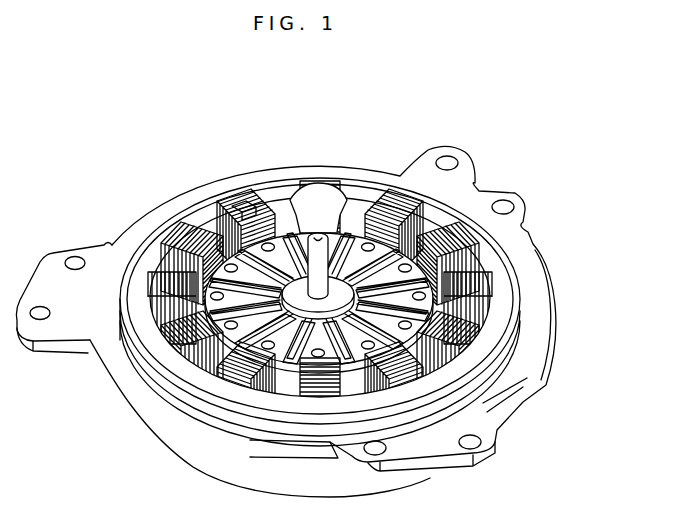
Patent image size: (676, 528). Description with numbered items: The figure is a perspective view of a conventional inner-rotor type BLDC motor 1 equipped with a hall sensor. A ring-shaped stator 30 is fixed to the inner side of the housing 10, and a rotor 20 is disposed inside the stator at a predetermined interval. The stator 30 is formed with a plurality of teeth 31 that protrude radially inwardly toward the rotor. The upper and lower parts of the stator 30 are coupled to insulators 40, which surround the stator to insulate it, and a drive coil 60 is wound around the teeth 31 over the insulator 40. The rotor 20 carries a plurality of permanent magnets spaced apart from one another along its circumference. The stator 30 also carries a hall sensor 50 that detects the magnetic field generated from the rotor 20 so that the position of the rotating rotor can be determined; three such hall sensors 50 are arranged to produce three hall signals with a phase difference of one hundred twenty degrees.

The inner-rotor type BLDC motor 1 is at (401, 125).
The housing 10 is at (526, 264).
The rotor 20 is at (513, 288).
The stator 30 is at (273, 176).
The teeth 31 is at (160, 262).
The insulator 40 is at (193, 216).
The hall sensor 50 is at (240, 204).
The drive coil 60 is at (370, 198).